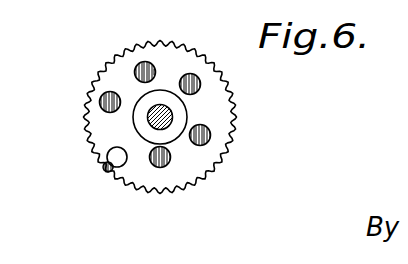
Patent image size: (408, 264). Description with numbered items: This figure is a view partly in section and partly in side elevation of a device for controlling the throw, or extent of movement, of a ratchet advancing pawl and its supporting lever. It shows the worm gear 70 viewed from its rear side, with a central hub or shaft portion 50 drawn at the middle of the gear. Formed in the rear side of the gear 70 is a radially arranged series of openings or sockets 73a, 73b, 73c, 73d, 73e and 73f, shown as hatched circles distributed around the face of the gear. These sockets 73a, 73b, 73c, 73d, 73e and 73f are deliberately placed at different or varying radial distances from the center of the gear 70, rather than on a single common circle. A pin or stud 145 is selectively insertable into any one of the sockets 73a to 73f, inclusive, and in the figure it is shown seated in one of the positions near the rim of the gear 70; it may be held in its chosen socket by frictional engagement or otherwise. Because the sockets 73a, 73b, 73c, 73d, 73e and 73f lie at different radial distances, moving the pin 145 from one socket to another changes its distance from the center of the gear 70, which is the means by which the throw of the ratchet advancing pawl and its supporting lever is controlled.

The gear 70 is at (197, 158).
The hub/shaft 50 is at (170, 116).
The opening or socket 73a is at (211, 135).
The opening or socket 73b is at (190, 73).
The opening or socket 73c is at (138, 64).
The opening or socket 73d is at (100, 101).
The opening or socket 73e is at (110, 170).
The opening or socket 73f is at (162, 168).
The pin or stud 145 is at (107, 158).